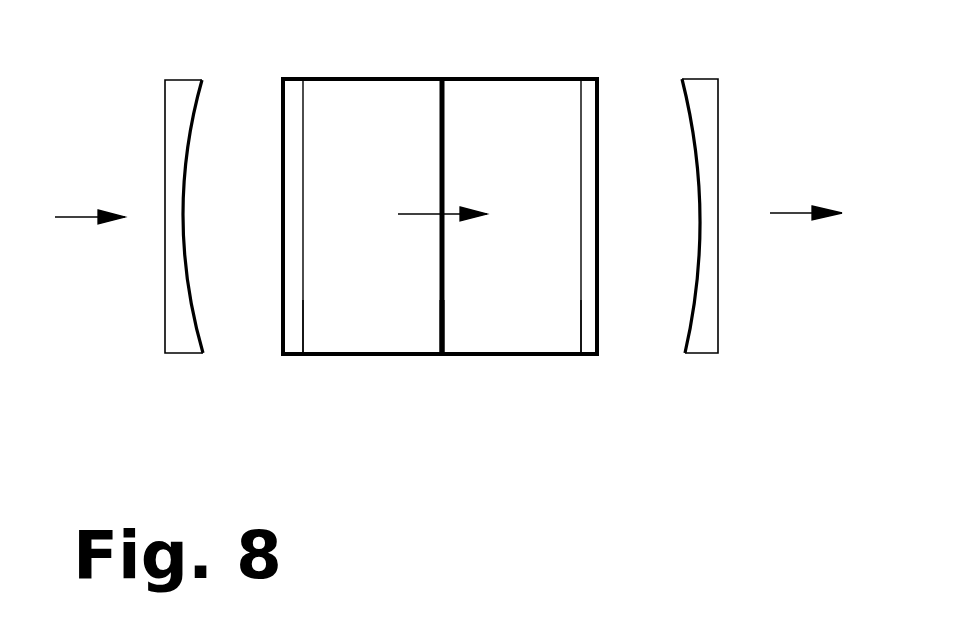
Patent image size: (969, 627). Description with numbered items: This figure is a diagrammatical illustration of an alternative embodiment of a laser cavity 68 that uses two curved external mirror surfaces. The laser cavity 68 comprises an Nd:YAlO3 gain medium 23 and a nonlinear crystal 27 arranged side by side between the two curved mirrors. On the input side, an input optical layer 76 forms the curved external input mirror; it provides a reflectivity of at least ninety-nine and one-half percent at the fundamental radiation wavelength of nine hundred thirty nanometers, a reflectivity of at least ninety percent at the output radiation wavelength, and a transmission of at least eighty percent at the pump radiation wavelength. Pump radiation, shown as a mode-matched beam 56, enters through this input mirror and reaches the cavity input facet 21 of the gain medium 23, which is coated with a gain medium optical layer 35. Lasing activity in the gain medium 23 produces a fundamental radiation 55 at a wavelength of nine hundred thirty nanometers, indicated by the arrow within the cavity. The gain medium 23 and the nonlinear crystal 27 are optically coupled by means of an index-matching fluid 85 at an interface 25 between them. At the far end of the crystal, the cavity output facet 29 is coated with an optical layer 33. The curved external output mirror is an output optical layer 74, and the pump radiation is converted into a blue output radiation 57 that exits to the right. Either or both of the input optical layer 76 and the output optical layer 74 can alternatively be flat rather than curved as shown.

The cavity input facet 21 is at (303, 120).
The gain medium 23 is at (362, 78).
The interface 25 is at (432, 97).
The nonlinear crystal 27 is at (514, 78).
The cavity output facet 29 is at (581, 143).
The optical layer 33 is at (581, 338).
The gain medium optical layer 35 is at (305, 338).
The fundamental radiation 55 is at (418, 216).
The mode-matched beam 56 is at (80, 218).
The blue output radiation 57 is at (808, 243).
The laser cavity 68 is at (440, 287).
The output optical layer 74 is at (700, 258).
The input optical layer 76 is at (192, 293).
The index-matching fluid 85 is at (441, 353).